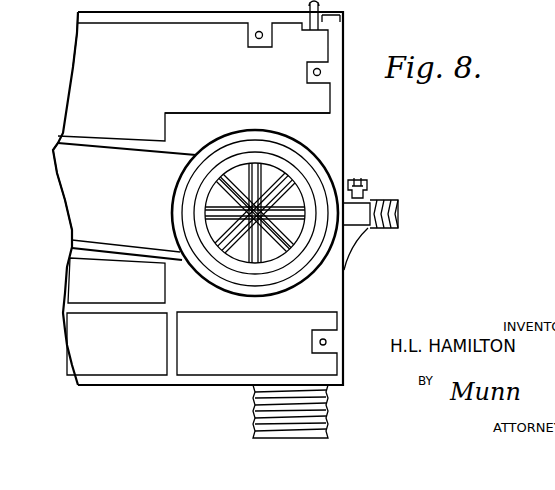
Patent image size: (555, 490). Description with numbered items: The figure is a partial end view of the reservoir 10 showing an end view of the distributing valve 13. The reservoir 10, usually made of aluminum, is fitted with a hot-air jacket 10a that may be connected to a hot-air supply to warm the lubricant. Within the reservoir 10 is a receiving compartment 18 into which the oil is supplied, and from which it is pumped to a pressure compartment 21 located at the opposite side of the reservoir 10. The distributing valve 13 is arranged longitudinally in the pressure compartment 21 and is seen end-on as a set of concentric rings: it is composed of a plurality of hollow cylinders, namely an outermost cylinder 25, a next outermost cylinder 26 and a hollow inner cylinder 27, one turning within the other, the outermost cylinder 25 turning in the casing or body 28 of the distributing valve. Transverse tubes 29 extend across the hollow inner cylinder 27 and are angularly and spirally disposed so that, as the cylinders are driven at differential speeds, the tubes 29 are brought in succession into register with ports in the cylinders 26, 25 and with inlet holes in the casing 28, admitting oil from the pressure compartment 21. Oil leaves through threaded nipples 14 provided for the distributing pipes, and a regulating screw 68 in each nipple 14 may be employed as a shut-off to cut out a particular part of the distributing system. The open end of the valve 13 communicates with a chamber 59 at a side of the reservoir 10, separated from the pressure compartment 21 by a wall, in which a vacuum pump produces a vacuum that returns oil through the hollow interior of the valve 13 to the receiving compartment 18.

The reservoir 10 is at (343, 120).
The hot-air jacket 10a is at (257, 343).
The distributing valve 13 is at (223, 115).
The threaded nipple 14 is at (390, 200).
The receiving compartment 18 is at (87, 43).
The pressure compartment 21 is at (194, 163).
The outermost cylinder 25 is at (190, 168).
The next outermost cylinder 26 is at (200, 178).
The hollow inner cylinder 27 is at (200, 198).
The casing or body of the distributing valve 28 is at (335, 150).
The transverse tubes 29 is at (252, 252).
The chamber 59 is at (79, 186).
The regulating screw 68 is at (367, 185).